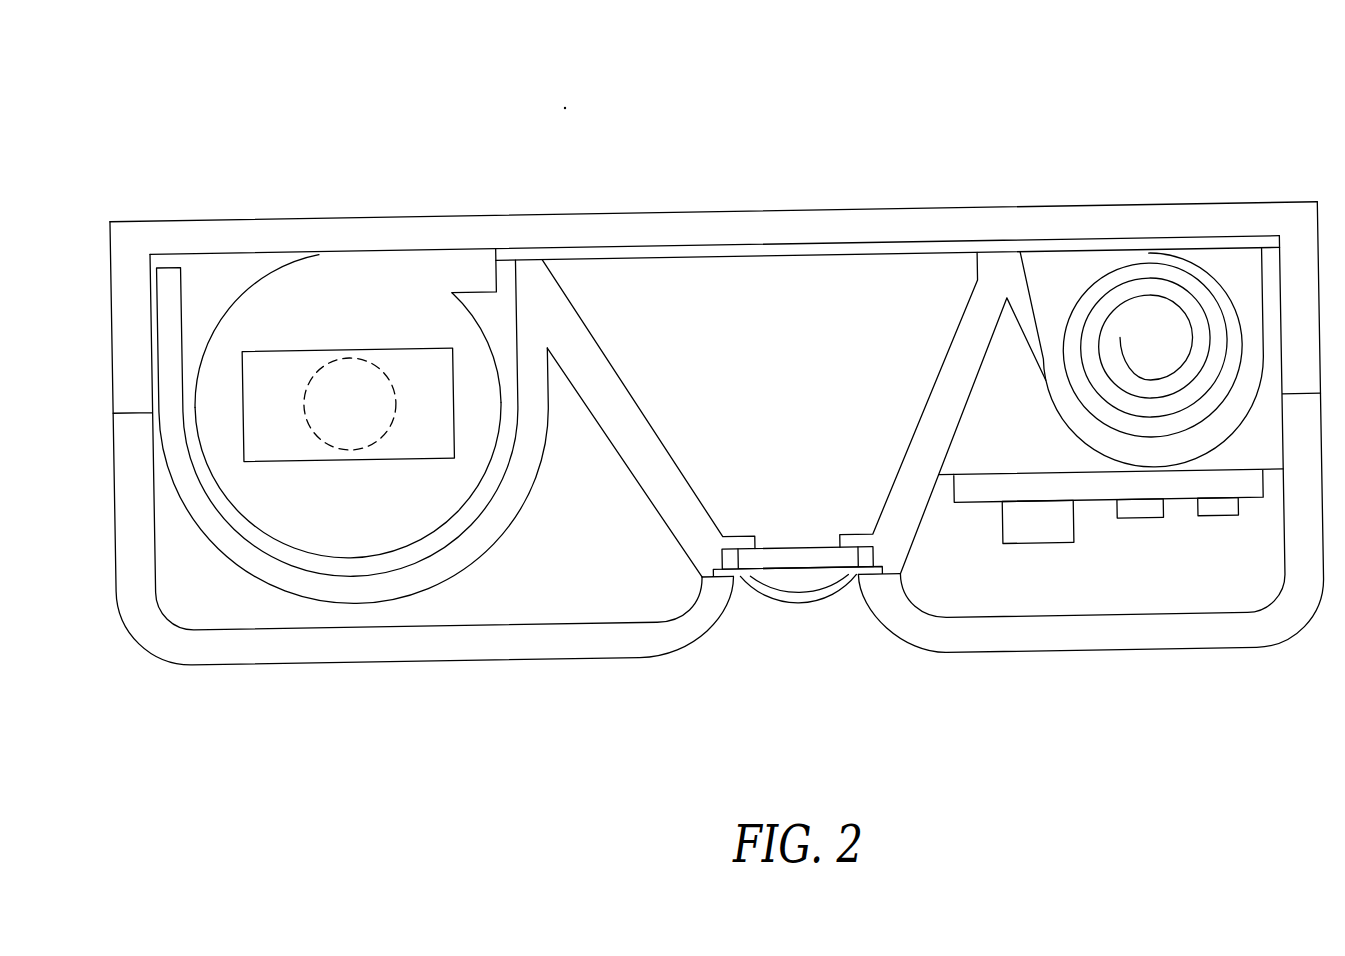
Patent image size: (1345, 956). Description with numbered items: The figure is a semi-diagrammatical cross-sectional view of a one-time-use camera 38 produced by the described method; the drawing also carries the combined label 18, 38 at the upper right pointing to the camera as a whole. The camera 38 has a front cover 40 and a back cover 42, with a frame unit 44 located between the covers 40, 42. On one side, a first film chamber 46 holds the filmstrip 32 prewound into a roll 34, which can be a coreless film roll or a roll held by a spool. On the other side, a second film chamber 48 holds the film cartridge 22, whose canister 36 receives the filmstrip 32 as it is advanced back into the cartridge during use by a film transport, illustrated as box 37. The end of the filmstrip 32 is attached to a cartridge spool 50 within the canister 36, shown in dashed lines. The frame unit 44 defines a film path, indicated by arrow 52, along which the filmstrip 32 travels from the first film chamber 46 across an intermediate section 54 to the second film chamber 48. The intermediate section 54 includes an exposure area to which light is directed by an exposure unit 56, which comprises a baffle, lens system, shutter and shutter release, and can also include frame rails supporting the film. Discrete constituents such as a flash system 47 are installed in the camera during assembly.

The vacuum cleaner assembly 18 is at (716, 383).
The one-time-use camera 38 is at (718, 433).
The film cartridge 22 is at (290, 258).
The filmstrip 32 is at (942, 253).
The film roll 34 is at (1092, 268).
The canister 36 is at (346, 557).
The film transport 37 is at (374, 350).
The front cover 40 is at (1100, 652).
The back cover 42 is at (863, 210).
The frame unit 44 is at (628, 465).
The first film chamber 46 is at (1265, 272).
The flash system 47 is at (1140, 518).
The second film chamber 48 is at (178, 290).
The cartridge spool 50 is at (300, 395).
The film path 52 is at (770, 238).
The intermediate section 54 is at (520, 260).
The exposure unit 56 is at (866, 634).